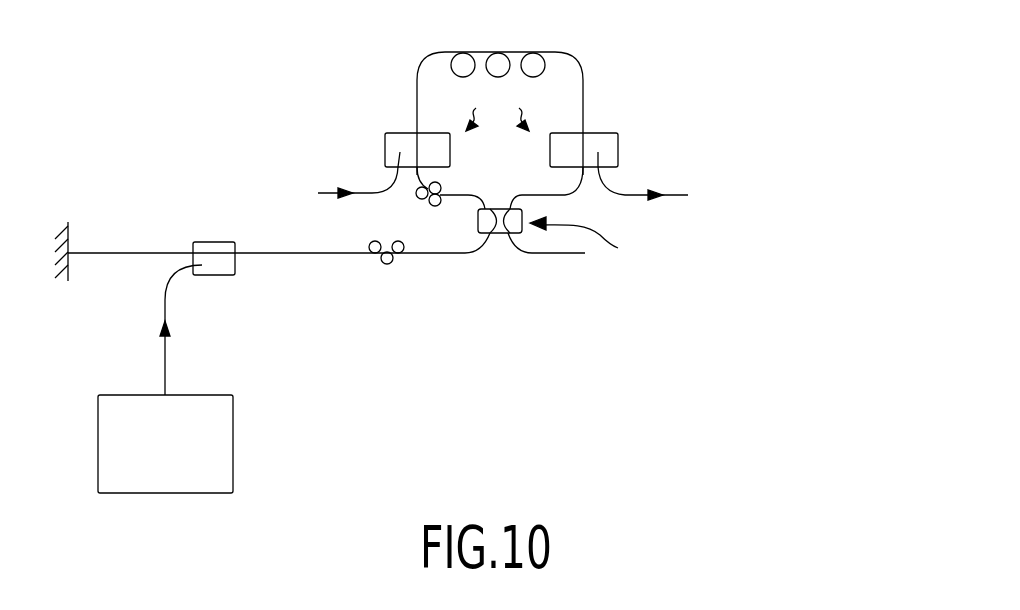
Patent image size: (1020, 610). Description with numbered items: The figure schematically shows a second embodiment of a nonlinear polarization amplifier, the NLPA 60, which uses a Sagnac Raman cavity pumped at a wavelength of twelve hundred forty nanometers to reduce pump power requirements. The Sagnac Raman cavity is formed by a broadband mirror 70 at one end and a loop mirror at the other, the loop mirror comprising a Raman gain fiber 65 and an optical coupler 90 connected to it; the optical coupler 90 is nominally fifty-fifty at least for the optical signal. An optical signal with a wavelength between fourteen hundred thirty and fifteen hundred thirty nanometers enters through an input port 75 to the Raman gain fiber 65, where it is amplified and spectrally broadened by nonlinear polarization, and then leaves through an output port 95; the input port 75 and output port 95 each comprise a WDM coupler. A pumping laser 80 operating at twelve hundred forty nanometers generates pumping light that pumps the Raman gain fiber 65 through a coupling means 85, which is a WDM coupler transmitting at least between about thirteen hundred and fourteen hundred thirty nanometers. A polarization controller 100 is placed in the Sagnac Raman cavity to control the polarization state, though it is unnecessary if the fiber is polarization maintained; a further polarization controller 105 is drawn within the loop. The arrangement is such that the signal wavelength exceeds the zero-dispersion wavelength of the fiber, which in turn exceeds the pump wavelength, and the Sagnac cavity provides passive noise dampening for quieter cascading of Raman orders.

The NLPA 60 is at (278, 50).
The Raman gain fiber 65 is at (585, 78).
The broadband mirror 70 is at (68, 235).
The input port 75 is at (316, 193).
The pumping laser 80 is at (233, 445).
The coupling means 85 is at (240, 261).
The optical coupler 90 is at (522, 229).
The output port 95 is at (668, 195).
The polarization controller 100 is at (395, 318).
The polarization controller in loop 105 is at (441, 184).